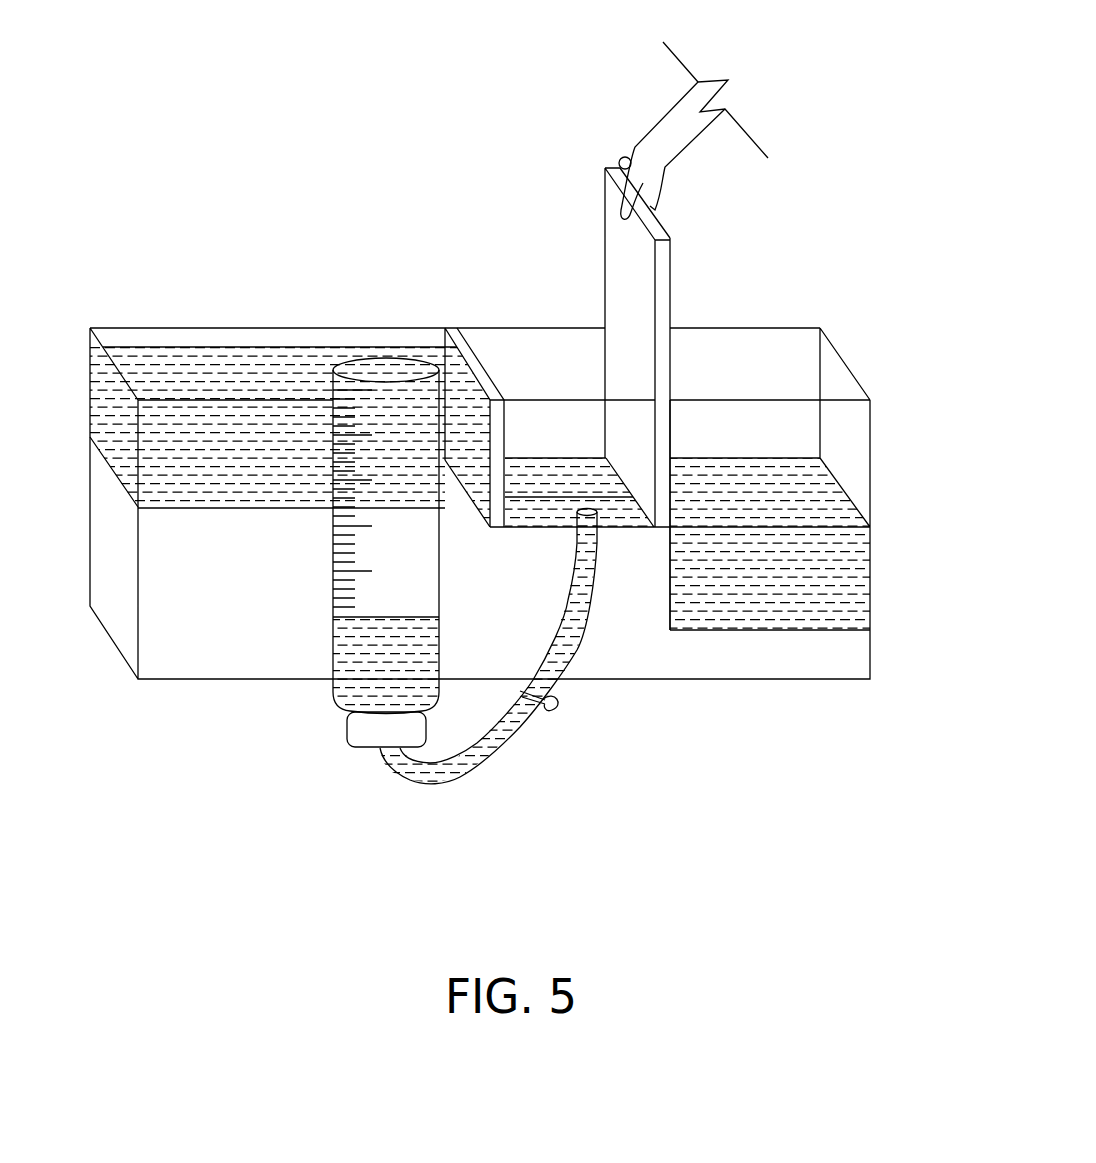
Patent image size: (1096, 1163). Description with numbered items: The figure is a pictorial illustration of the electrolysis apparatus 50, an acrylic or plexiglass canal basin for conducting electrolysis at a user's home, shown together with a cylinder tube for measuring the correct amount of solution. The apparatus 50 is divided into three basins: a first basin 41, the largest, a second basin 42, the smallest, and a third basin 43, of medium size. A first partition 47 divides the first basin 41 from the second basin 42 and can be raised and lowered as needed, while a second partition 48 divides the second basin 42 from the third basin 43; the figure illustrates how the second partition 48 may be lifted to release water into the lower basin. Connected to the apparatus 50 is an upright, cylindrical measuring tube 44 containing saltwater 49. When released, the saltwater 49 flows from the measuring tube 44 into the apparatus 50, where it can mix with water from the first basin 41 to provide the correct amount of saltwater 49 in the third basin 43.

The first basin 41 is at (117, 422).
The second basin 42 is at (522, 327).
The third basin 43 is at (746, 327).
The measuring tube 44 is at (332, 578).
The first partition 47 is at (448, 327).
The second partition 48 is at (603, 164).
The saltwater 49 is at (835, 585).
The electrolysis apparatus 50 is at (273, 327).